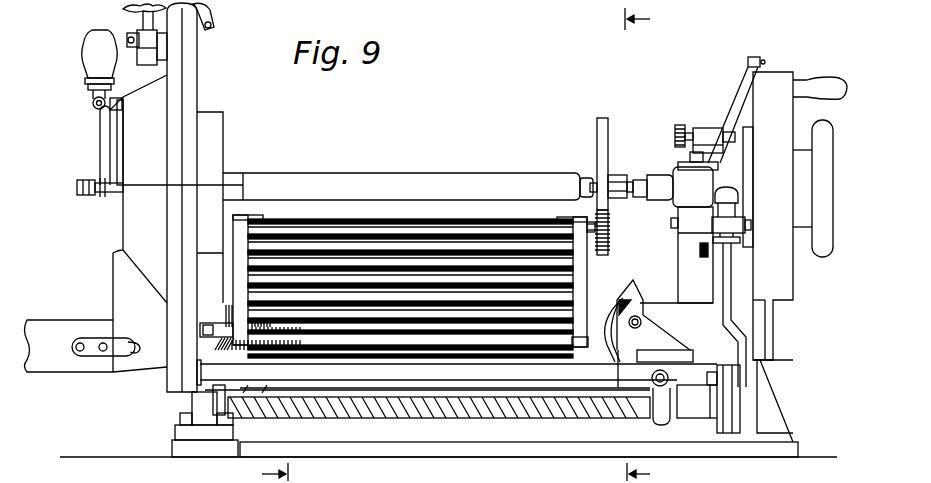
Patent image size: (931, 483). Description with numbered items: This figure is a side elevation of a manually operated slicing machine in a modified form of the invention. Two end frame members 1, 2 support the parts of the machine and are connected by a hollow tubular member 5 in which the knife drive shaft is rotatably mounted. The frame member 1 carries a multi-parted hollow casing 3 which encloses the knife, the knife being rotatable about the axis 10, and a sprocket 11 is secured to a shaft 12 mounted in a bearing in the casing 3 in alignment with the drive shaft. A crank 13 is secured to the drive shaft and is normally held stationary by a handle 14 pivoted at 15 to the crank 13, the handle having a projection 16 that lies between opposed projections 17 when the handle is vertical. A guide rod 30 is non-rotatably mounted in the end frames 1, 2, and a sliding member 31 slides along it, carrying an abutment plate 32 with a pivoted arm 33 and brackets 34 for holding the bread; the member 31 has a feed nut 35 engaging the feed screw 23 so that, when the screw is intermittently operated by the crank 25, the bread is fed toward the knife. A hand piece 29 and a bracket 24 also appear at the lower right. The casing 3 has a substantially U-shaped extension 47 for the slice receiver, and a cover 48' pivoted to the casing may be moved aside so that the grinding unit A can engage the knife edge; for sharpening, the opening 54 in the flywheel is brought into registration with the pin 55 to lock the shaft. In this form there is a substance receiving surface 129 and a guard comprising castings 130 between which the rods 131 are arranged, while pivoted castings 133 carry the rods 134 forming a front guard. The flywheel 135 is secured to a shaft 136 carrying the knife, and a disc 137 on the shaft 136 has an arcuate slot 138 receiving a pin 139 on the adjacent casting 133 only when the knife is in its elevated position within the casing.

The end frame member 1 is at (200, 395).
The end frame member 2 is at (693, 410).
The hollow casing 3 is at (220, 142).
The hollow tubular member 5 is at (510, 183).
The knife axis 10 is at (652, 245).
The sprocket 11 is at (260, 473).
The shaft 12 is at (77, 188).
The crank 13 is at (100, 143).
The handle 14 is at (90, 47).
The pivot 15 is at (93, 104).
The projection 16 is at (112, 98).
The opposed projections 17 is at (115, 106).
The feed screw 23 is at (514, 400).
The bearing bracket 24 is at (727, 425).
The crank 25 is at (720, 363).
The hand lever 29 is at (748, 152).
The guide rod 30 is at (543, 382).
The sliding member 31 is at (630, 378).
The abutment plate 32 is at (618, 352).
The pivoted arm 33 is at (638, 303).
The brackets 34 is at (610, 308).
The feed nut 35 is at (660, 397).
The U-shaped extension 47 is at (113, 296).
The cover 48' is at (224, 16).
The opening 54 is at (736, 108).
The pin 55 is at (678, 125).
The substance receiving surface 129 is at (460, 364).
The castings 130 is at (263, 218).
The rods 131 is at (410, 224).
The castings 133 is at (243, 218).
The rods 134 is at (433, 255).
The flywheel 135 is at (794, 283).
The shaft 136 is at (643, 178).
The disc 137 is at (608, 135).
The arcuate slot 138 is at (609, 220).
The pin 139 is at (608, 228).
The grinding unit A is at (137, 16).